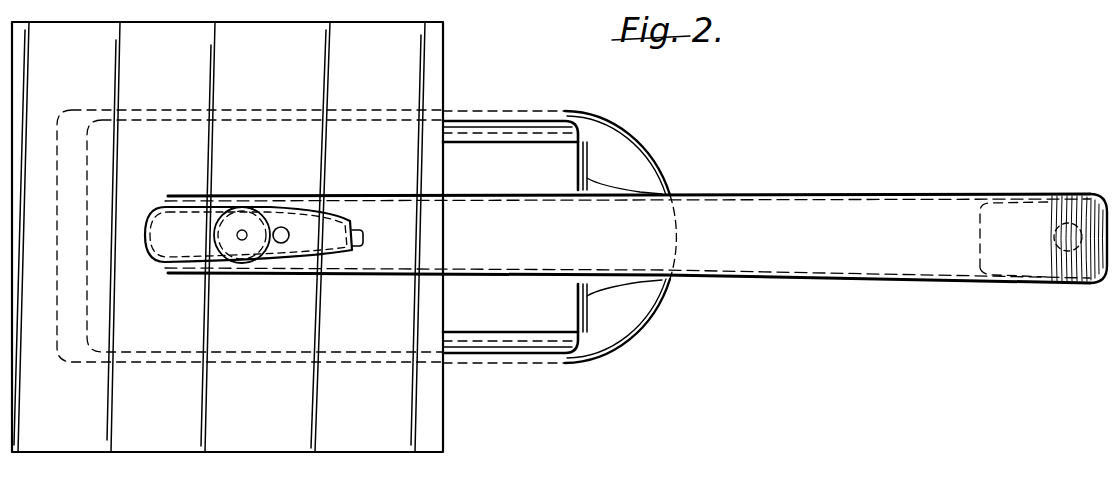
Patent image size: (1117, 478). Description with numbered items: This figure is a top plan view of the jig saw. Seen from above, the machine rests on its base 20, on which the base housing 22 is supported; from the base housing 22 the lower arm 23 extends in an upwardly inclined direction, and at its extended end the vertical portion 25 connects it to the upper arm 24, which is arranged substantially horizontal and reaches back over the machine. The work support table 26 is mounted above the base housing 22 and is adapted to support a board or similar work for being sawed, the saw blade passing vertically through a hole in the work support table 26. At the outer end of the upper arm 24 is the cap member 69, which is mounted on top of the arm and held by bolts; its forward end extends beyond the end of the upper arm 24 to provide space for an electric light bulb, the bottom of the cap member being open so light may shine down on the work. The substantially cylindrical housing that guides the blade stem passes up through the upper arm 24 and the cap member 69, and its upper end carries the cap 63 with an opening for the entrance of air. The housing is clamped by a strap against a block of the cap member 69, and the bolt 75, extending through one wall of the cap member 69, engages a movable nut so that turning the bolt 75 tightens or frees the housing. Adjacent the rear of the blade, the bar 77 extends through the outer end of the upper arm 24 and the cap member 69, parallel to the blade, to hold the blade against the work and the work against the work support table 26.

The base 20 is at (620, 142).
The base housing 22 is at (558, 343).
The lower arm 23 is at (668, 283).
The upper arm 24 is at (853, 255).
The vertical portion 25 is at (977, 253).
The work support table 26 is at (420, 62).
The cap 63 is at (233, 220).
The cap member 69 is at (322, 222).
The bolt 75 is at (364, 237).
The bar 77 is at (283, 227).